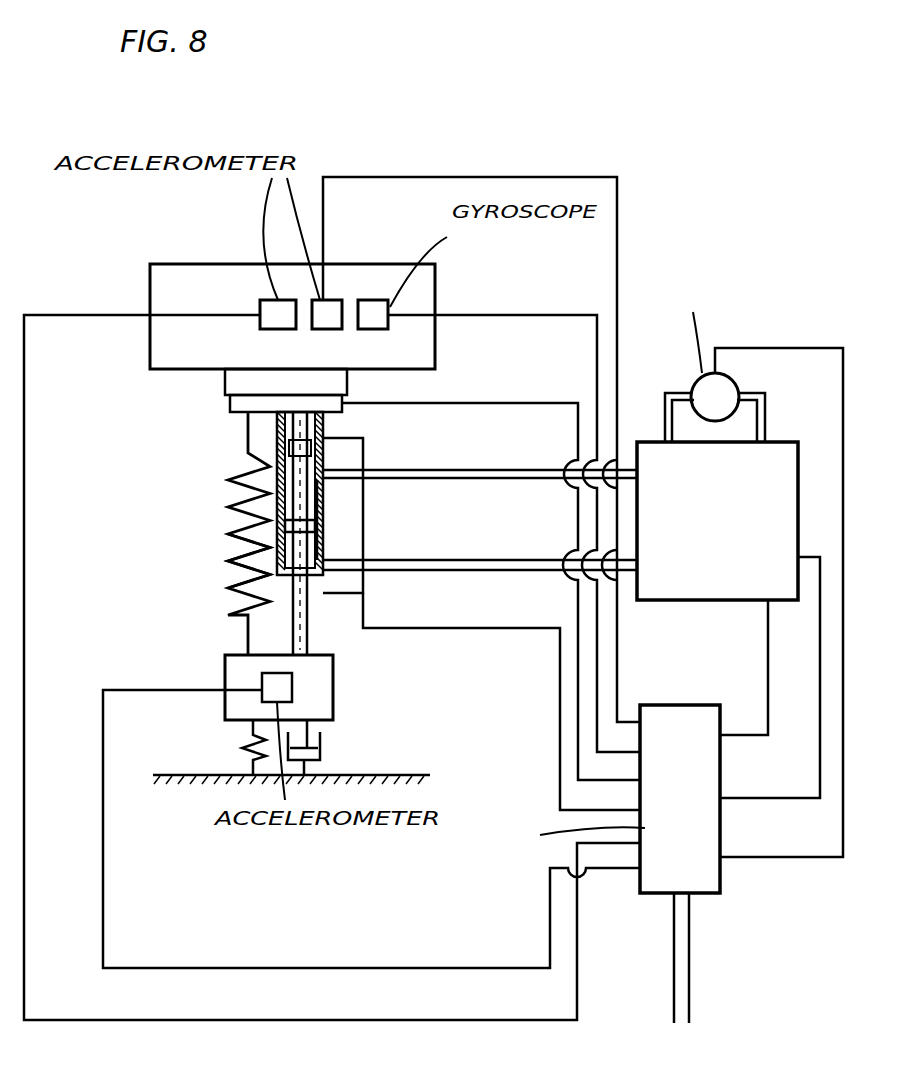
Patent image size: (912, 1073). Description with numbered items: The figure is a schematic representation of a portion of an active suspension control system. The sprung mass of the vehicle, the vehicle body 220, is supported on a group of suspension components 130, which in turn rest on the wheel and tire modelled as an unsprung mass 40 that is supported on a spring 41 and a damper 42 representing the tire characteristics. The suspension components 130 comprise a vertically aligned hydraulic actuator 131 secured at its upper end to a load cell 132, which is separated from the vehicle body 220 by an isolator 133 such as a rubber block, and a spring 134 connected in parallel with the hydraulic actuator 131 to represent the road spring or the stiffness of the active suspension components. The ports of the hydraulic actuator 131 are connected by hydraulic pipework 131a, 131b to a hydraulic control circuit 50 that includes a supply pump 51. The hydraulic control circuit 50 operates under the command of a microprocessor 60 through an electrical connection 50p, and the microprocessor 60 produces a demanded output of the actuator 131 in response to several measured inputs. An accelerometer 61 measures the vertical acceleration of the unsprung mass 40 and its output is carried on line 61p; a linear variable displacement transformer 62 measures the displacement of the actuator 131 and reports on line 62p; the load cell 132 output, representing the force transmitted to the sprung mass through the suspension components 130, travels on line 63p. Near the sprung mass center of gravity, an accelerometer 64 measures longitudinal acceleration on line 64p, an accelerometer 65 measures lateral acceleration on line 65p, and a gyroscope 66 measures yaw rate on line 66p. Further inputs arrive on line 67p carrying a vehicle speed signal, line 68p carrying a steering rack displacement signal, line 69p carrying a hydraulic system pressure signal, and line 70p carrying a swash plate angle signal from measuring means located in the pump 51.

The vehicle body 220 is at (347, 262).
The accelerometer 64 is at (275, 300).
The accelerometer 65 is at (315, 300).
The gyroscope 66 is at (378, 300).
The isolator 133 is at (225, 380).
The load cell 132 is at (230, 405).
The linear variable displacement transformer (LVDT) 62 is at (322, 440).
The hydraulic actuator 131 is at (240, 487).
The spring 134 is at (240, 543).
The suspension components 130 is at (362, 523).
The hydraulic pipework 131a is at (520, 470).
The hydraulic pipework 131b is at (525, 560).
The hydraulic control circuit 50 is at (717, 521).
The supply pump 51 is at (700, 383).
The microprocessor 60 is at (570, 807).
The unsprung mass 40 is at (225, 705).
The accelerometer 61 is at (262, 675).
The spring 41 is at (253, 745).
The damper 42 is at (322, 752).
The line 65p is at (492, 177).
The line 66p is at (540, 315).
The line 63p is at (540, 403).
The line 64p is at (25, 568).
The line 61p is at (145, 690).
The line 62p is at (443, 630).
The electrical connection 50p is at (768, 648).
The line 69p is at (775, 798).
The line 70p is at (795, 857).
The line 67p is at (672, 1005).
The line 68p is at (692, 1005).